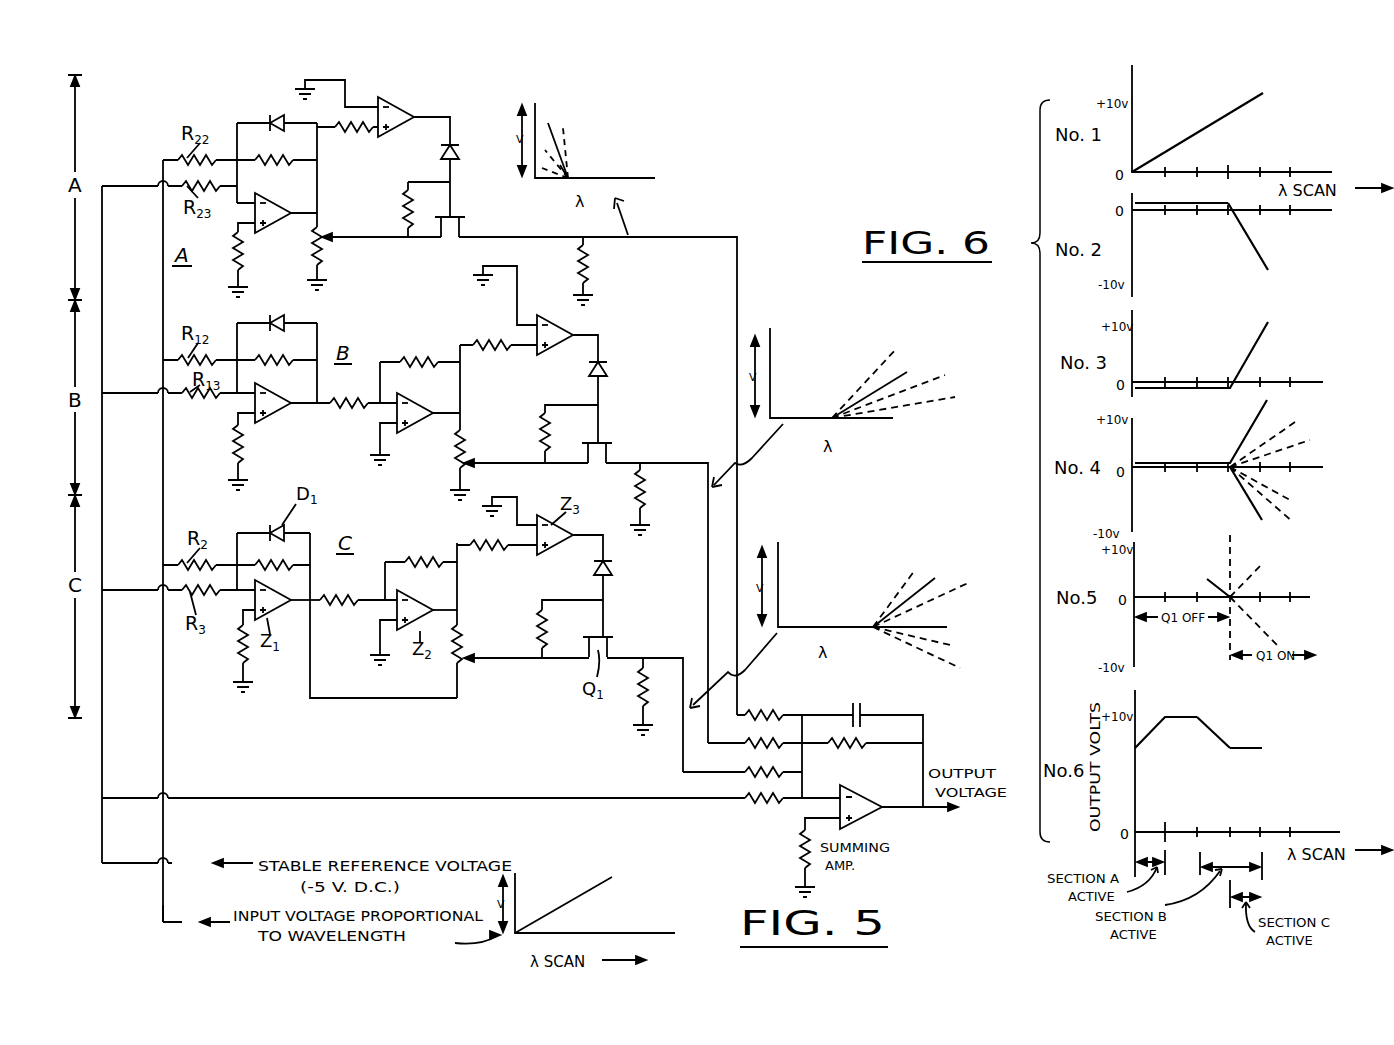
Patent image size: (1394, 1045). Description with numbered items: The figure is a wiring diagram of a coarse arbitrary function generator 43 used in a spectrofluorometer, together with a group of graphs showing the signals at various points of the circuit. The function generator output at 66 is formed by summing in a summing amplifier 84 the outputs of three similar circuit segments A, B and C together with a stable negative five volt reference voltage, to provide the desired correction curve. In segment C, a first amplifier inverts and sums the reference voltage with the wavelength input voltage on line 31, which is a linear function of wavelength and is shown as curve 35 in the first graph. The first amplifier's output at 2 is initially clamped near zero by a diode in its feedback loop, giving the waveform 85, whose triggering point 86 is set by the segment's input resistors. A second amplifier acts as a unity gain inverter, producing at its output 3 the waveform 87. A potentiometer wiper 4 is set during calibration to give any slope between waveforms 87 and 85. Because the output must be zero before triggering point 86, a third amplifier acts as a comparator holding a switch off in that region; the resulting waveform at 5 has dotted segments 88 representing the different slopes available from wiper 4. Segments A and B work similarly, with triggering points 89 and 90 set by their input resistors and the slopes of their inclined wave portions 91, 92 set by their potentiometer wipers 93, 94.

In FIG. 5, the amplifier output 2 is at (298, 604).
In FIG. 5, the amplifier output 3 is at (434, 607).
In FIG. 5, the potentiometer wiper 4 is at (468, 656).
In FIG. 5, the waveform point 5 is at (633, 656).
In FIG. 5, the wavelength input voltage line 31 is at (175, 921).
In FIG. 5, the coarse function generator 43 is at (748, 155).
In FIG. 5, the function generator output 66 is at (930, 812).
In FIG. 5, the summing amplifier 84 is at (861, 792).
In FIG. 5, the potentiometer wiper 93 is at (325, 236).
In FIG. 5, the potentiometer wiper 94 is at (471, 461).
In FIG. 5, the inclined wave portion 91 is at (552, 128).
In FIG. 5, the triggering point 89 is at (571, 175).
In FIG. 6, the triggering point 89 is at (1167, 713).
In FIG. 5, the triggering point 90 is at (833, 415).
In FIG. 6, the triggering point 90 is at (1200, 716).
In FIG. 5, the inclined wave portion 92 is at (900, 375).
In FIG. 5, the triggering point 86 is at (871, 622).
In FIG. 6, the triggering point 86 is at (1222, 207).
In FIG. 5, the dotted waveform segments 88 is at (917, 590).
In FIG. 6, the dotted waveform segments 88 is at (1280, 549).
In FIG. 6, the input voltage waveform 35 is at (1193, 131).
In FIG. 6, the waveform 85 is at (1233, 219).
In FIG. 6, the waveform 87 is at (1252, 348).